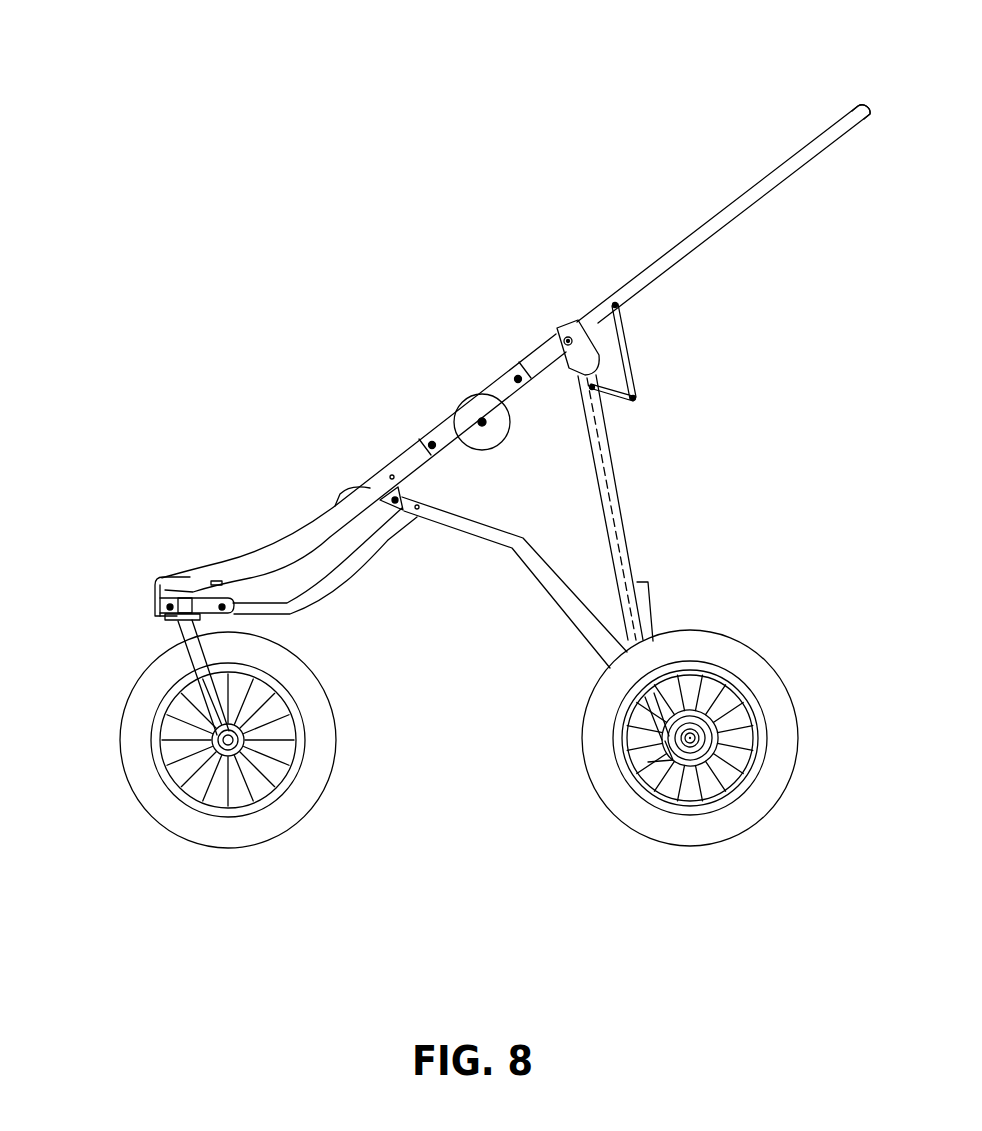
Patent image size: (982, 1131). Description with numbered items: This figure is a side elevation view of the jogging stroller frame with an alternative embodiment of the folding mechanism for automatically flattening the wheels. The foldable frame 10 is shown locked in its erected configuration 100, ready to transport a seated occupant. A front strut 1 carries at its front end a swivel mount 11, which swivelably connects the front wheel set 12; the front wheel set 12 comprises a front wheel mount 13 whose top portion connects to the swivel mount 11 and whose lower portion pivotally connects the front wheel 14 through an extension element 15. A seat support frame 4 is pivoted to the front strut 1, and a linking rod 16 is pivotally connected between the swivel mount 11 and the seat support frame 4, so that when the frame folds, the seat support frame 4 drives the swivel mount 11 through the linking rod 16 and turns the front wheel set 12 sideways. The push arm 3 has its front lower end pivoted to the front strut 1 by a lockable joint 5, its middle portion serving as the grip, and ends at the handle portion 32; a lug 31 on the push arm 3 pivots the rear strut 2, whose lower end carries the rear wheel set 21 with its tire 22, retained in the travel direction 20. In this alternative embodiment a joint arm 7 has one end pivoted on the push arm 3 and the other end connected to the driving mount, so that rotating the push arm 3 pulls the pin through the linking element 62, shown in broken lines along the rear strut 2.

The erected configuration 100 is at (413, 243).
The front strut 1 is at (287, 550).
The rear strut 2 is at (627, 550).
The push arm 3 is at (728, 212).
The seat support frame 4 is at (493, 540).
The lockable joint 5 is at (478, 418).
The joint arm 7 is at (637, 376).
The foldable frame 10 is at (743, 455).
The swivel mount 11 is at (160, 602).
The front wheel set 12 is at (140, 793).
The front wheel mount 13 is at (193, 600).
The front wheel 14 is at (313, 760).
The extension element 15 is at (220, 713).
The linking rod 16 is at (342, 568).
The travel direction 20 is at (710, 867).
The rear wheel set 21 is at (588, 798).
The rear tire 22 is at (777, 760).
The lug 31 is at (572, 328).
The handle grip end 32 is at (860, 113).
The linking element 62 is at (620, 473).